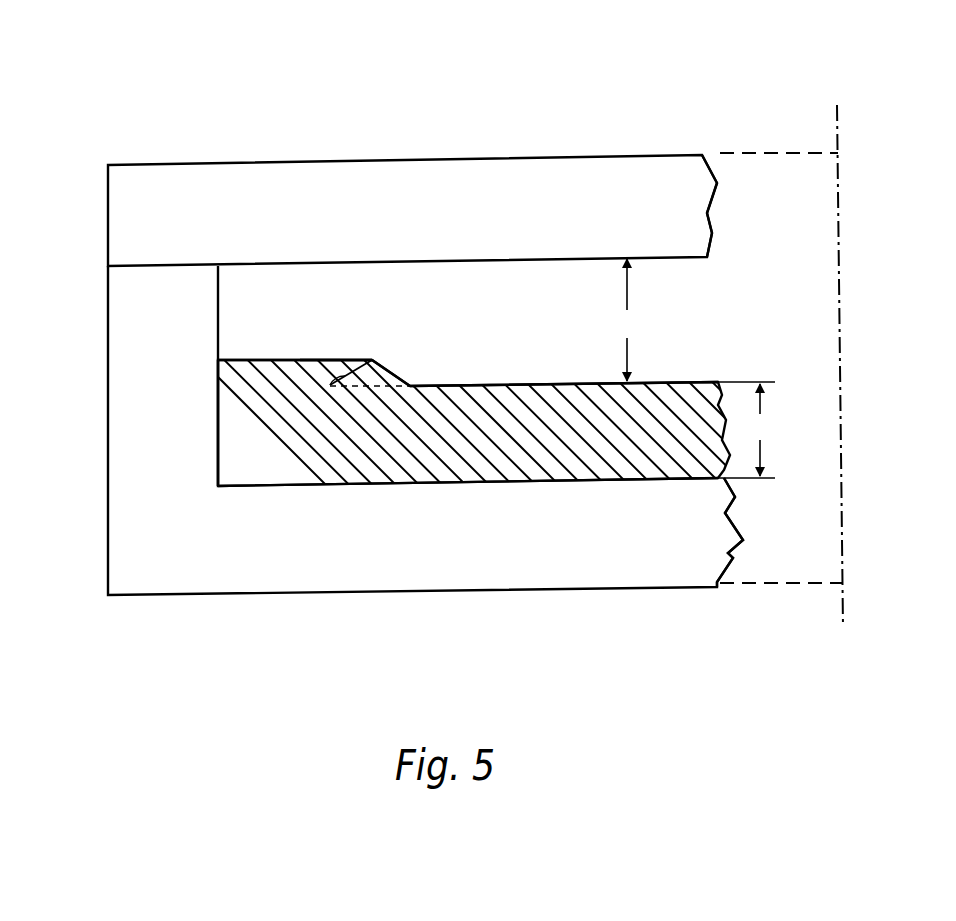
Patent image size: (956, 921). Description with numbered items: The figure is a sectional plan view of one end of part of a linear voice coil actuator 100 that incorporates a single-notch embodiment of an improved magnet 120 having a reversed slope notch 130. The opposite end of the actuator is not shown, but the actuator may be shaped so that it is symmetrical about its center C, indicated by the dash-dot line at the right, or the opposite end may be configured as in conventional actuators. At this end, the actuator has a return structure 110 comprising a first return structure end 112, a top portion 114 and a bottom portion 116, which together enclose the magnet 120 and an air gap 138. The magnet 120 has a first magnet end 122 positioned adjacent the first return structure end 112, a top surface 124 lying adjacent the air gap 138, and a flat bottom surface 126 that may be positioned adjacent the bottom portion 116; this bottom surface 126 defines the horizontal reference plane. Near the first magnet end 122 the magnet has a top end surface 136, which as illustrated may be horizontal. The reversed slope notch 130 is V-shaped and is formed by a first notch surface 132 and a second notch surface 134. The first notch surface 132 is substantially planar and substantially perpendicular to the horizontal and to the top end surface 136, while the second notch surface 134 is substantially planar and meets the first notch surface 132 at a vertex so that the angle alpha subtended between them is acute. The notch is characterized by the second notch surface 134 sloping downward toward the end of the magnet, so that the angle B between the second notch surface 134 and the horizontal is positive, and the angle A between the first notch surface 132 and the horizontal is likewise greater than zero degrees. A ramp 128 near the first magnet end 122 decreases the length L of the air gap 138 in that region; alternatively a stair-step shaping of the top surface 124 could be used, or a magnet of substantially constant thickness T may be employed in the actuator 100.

The linear voice coil actuator 100 is at (154, 86).
The return structure 110 is at (148, 162).
The first return structure end 112 is at (140, 339).
The top portion 114 is at (683, 170).
The bottom portion 116 is at (497, 545).
The magnet 120 is at (265, 467).
The first magnet end 122 is at (218, 447).
The top surface 124 is at (693, 382).
The bottom surface 126 is at (672, 482).
The ramp 128 is at (412, 388).
The reversed slope notch 130 is at (360, 338).
The first notch surface 132 is at (310, 358).
The second notch surface 134 is at (352, 350).
The top end surface 136 is at (263, 358).
The air gap 138 is at (676, 320).
The angle between first notch surface and horizontal A is at (341, 354).
The angle between second notch surface and horizontal B is at (391, 362).
The subtended angle of the notch alpha is at (322, 378).
The length of the air gap L is at (627, 320).
The thickness of the magnet T is at (746, 430).
The center C is at (838, 366).